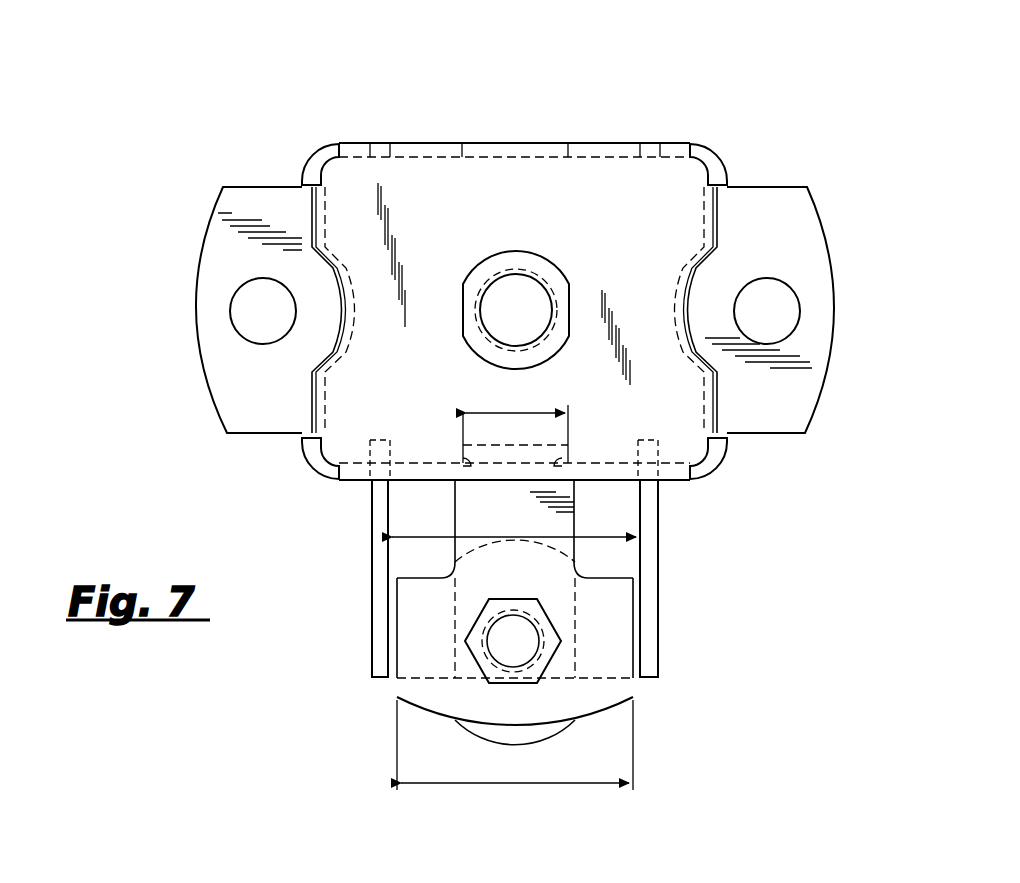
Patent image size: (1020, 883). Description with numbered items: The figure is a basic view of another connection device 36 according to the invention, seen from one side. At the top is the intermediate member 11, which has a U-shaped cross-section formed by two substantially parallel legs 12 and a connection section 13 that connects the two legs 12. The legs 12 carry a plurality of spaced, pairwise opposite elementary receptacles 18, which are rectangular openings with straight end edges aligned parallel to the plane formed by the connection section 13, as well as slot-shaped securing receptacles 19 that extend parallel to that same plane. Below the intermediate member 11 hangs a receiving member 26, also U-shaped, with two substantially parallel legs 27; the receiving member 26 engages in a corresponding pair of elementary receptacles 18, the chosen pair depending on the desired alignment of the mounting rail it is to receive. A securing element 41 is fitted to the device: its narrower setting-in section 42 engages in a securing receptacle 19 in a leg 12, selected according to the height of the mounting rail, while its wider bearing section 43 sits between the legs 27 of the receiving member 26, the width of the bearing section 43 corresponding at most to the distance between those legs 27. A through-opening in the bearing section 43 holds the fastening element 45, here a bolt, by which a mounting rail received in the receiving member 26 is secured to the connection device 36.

The intermediate member 11 is at (830, 215).
The legs 12 is at (585, 150).
The connection section 13 is at (440, 175).
The elementary receptacles 18 is at (370, 150).
The securing receptacles 19 is at (460, 150).
The receiving member 26 is at (368, 613).
The legs 27 is at (372, 557).
The connection device 36 is at (240, 110).
The securing element 41 is at (605, 714).
The setting-in section 42 is at (470, 497).
The bearing section 43 is at (425, 690).
The fastening element 45 is at (522, 634).